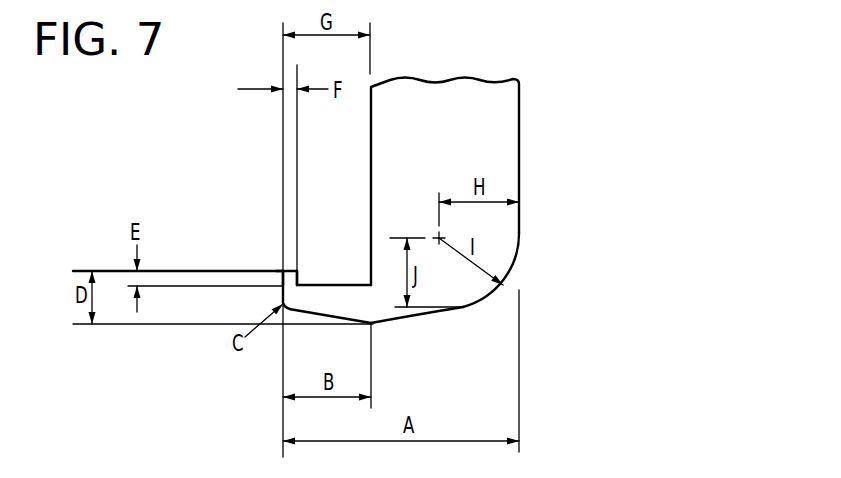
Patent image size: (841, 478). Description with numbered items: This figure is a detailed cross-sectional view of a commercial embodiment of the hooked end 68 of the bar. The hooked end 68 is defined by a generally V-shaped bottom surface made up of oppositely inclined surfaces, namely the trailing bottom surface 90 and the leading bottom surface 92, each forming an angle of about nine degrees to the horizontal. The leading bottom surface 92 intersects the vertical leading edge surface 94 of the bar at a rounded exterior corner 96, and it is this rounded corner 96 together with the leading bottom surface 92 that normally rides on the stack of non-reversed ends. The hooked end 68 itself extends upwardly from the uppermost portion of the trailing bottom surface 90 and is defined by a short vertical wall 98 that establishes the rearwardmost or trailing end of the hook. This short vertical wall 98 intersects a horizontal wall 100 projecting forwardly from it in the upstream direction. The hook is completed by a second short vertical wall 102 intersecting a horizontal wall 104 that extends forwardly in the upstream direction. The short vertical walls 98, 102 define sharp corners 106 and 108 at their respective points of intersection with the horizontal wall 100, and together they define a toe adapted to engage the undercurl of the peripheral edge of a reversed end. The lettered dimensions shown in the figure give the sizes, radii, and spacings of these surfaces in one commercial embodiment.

The hooked end 68 is at (600, 331).
The trailing bottom surface 90 is at (313, 316).
The leading bottom surface 92 is at (415, 318).
The vertical leading edge surface 94 is at (503, 105).
The rounded exterior corner 96 is at (509, 279).
The short vertical wall 98 is at (280, 271).
The horizontal wall 100 is at (283, 270).
The second short vertical wall 102 is at (299, 274).
The horizontal wall 104 is at (344, 281).
The sharp corner 106 is at (281, 268).
The sharp corner 108 is at (298, 272).